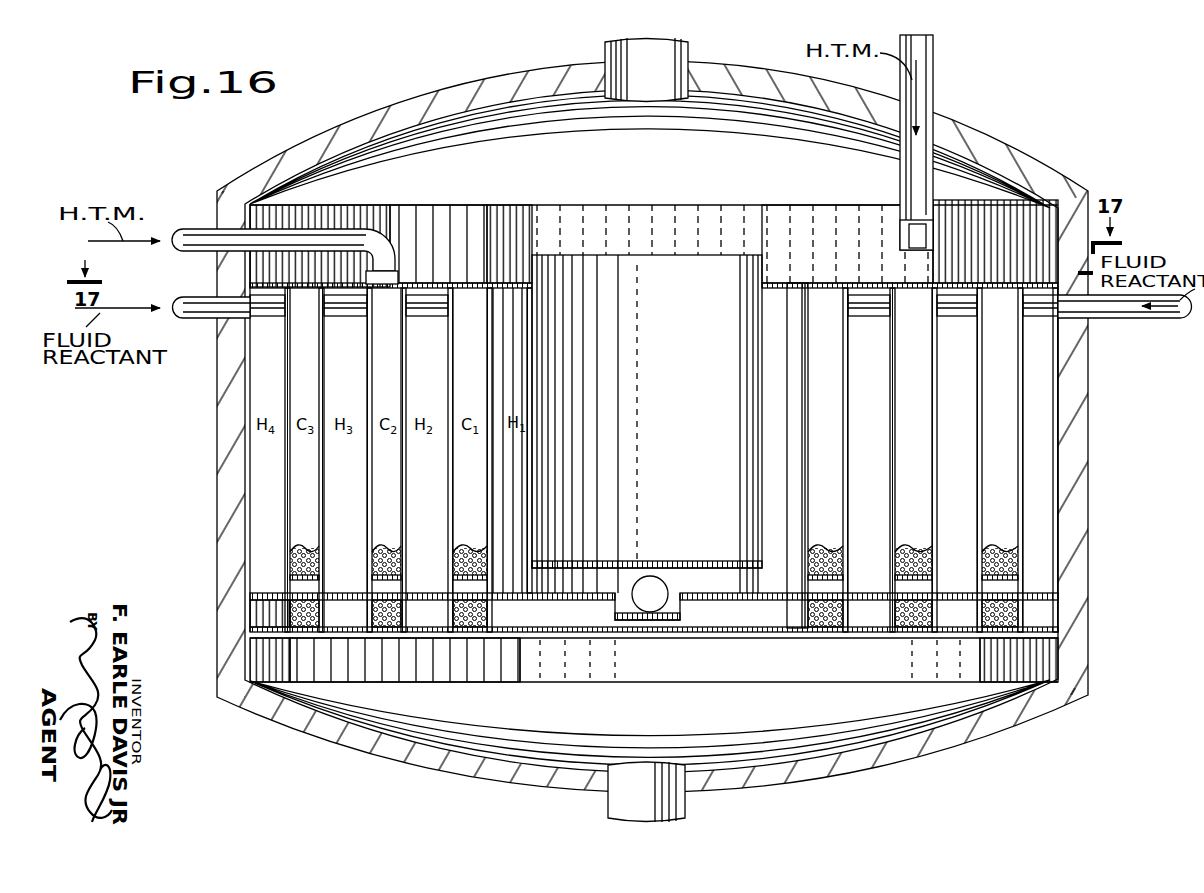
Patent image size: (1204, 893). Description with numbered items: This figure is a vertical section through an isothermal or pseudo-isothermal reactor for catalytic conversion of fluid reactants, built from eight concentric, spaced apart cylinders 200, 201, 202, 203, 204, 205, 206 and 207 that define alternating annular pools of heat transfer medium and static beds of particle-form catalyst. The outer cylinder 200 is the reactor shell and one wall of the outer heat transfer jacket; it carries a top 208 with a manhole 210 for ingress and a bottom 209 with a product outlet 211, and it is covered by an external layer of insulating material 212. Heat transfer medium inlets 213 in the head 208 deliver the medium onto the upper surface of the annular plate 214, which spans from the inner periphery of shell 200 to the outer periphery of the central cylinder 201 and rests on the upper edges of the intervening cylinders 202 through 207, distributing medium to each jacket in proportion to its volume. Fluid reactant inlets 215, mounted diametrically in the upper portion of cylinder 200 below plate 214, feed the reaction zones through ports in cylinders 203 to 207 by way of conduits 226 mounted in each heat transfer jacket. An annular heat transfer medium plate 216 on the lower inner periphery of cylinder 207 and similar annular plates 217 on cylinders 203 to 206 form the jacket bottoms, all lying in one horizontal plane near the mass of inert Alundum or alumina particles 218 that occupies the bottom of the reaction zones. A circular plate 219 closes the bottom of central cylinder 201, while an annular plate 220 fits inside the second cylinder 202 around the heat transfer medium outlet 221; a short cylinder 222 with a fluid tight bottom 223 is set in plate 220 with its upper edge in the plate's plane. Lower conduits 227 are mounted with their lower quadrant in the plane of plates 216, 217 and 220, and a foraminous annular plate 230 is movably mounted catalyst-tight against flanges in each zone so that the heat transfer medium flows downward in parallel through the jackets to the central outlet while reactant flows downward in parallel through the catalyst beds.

The outer cylinder 200 is at (1070, 428).
The central cylinder 201 is at (757, 283).
The second cylinder 202 is at (806, 305).
The cylinder 203 is at (845, 367).
The cylinder 204 is at (890, 405).
The cylinder 205 is at (933, 443).
The cylinder 206 is at (977, 475).
The cylinder 207 is at (284, 470).
The top 208 is at (985, 150).
The bottom 209 is at (925, 733).
The manhole 210 is at (666, 62).
The product outlet 211 is at (622, 806).
The insulating material 212 is at (1090, 493).
The heat transfer medium inlet 213 is at (206, 238).
The annular plate 214 is at (818, 280).
The fluid reactant inlet 215 is at (192, 303).
The annular heat transfer medium plate 216 is at (252, 583).
The annular plate 217 is at (348, 598).
The mass of particles of inert material 218 is at (830, 636).
The circular plate 219 is at (717, 562).
The annular plate 220 is at (762, 595).
The heat transfer medium outlet 221 is at (660, 582).
The cylinder 222 is at (687, 608).
The fluid tight bottom 223 is at (640, 622).
The conduit 226 is at (252, 316).
The conduit 227 is at (288, 582).
The foraminous annular plate 230 is at (387, 640).